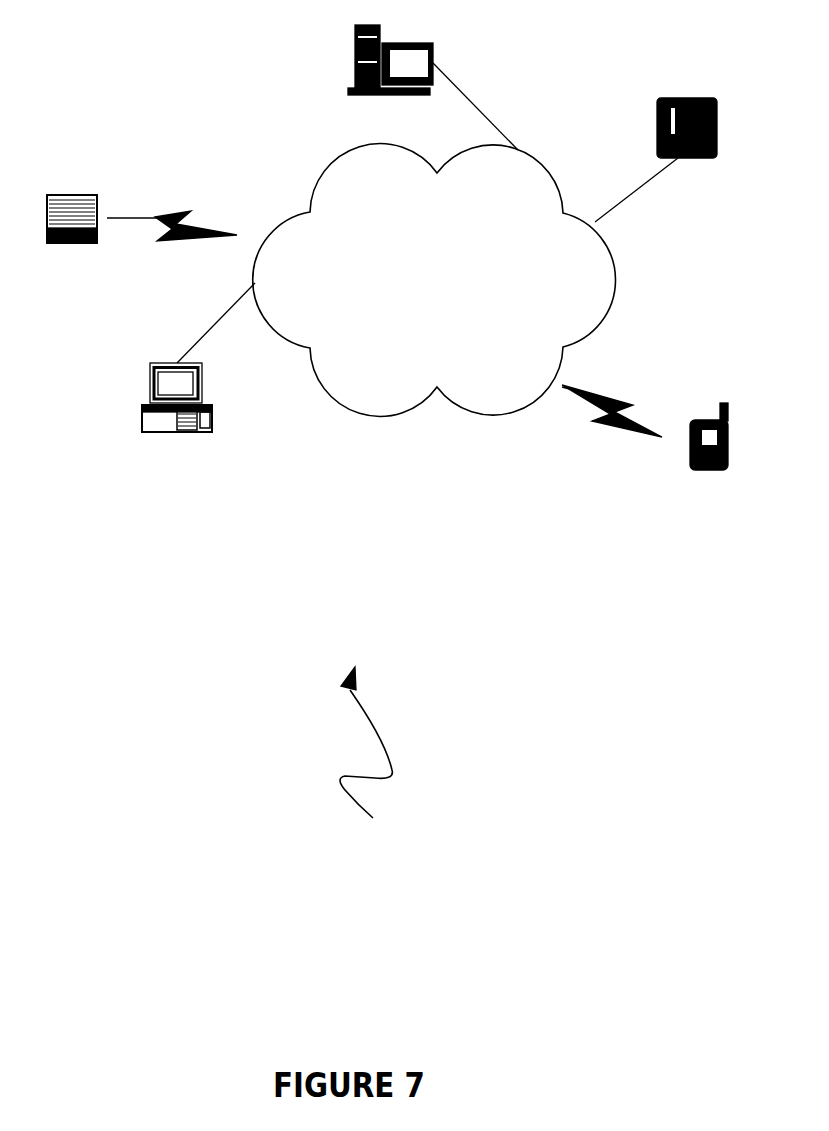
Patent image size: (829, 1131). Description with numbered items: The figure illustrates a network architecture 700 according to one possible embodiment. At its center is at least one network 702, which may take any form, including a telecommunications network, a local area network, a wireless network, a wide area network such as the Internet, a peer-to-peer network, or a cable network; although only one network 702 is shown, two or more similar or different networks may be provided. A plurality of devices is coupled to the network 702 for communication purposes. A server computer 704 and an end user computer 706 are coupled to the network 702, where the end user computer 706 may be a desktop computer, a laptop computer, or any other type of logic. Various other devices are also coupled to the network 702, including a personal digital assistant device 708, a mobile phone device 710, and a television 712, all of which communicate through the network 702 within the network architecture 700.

The network architecture 700 is at (373, 759).
The network 702 is at (488, 415).
The server computer 704 is at (355, 57).
The end user computer 706 is at (142, 408).
The personal digital assistant (PDA) device 708 is at (70, 193).
The mobile phone device 710 is at (690, 422).
The television 712 is at (660, 95).